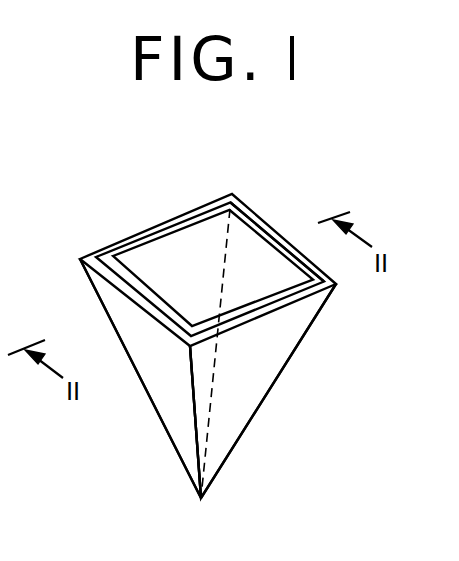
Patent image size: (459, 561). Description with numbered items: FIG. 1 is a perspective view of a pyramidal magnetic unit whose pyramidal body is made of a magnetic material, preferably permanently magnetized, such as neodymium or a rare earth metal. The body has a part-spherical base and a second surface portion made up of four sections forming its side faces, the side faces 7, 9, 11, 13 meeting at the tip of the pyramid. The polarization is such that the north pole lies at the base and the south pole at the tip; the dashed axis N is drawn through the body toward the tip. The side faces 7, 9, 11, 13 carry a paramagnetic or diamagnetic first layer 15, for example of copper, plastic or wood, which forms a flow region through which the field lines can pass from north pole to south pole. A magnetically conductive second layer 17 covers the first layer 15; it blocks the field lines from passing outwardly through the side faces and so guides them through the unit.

The side face 7 is at (303, 307).
The side face 9 is at (240, 383).
The side face 11 is at (167, 383).
The side face 13 is at (148, 268).
The first layer 15 is at (268, 224).
The second layer 17 is at (277, 302).
The normal axis N is at (213, 353).